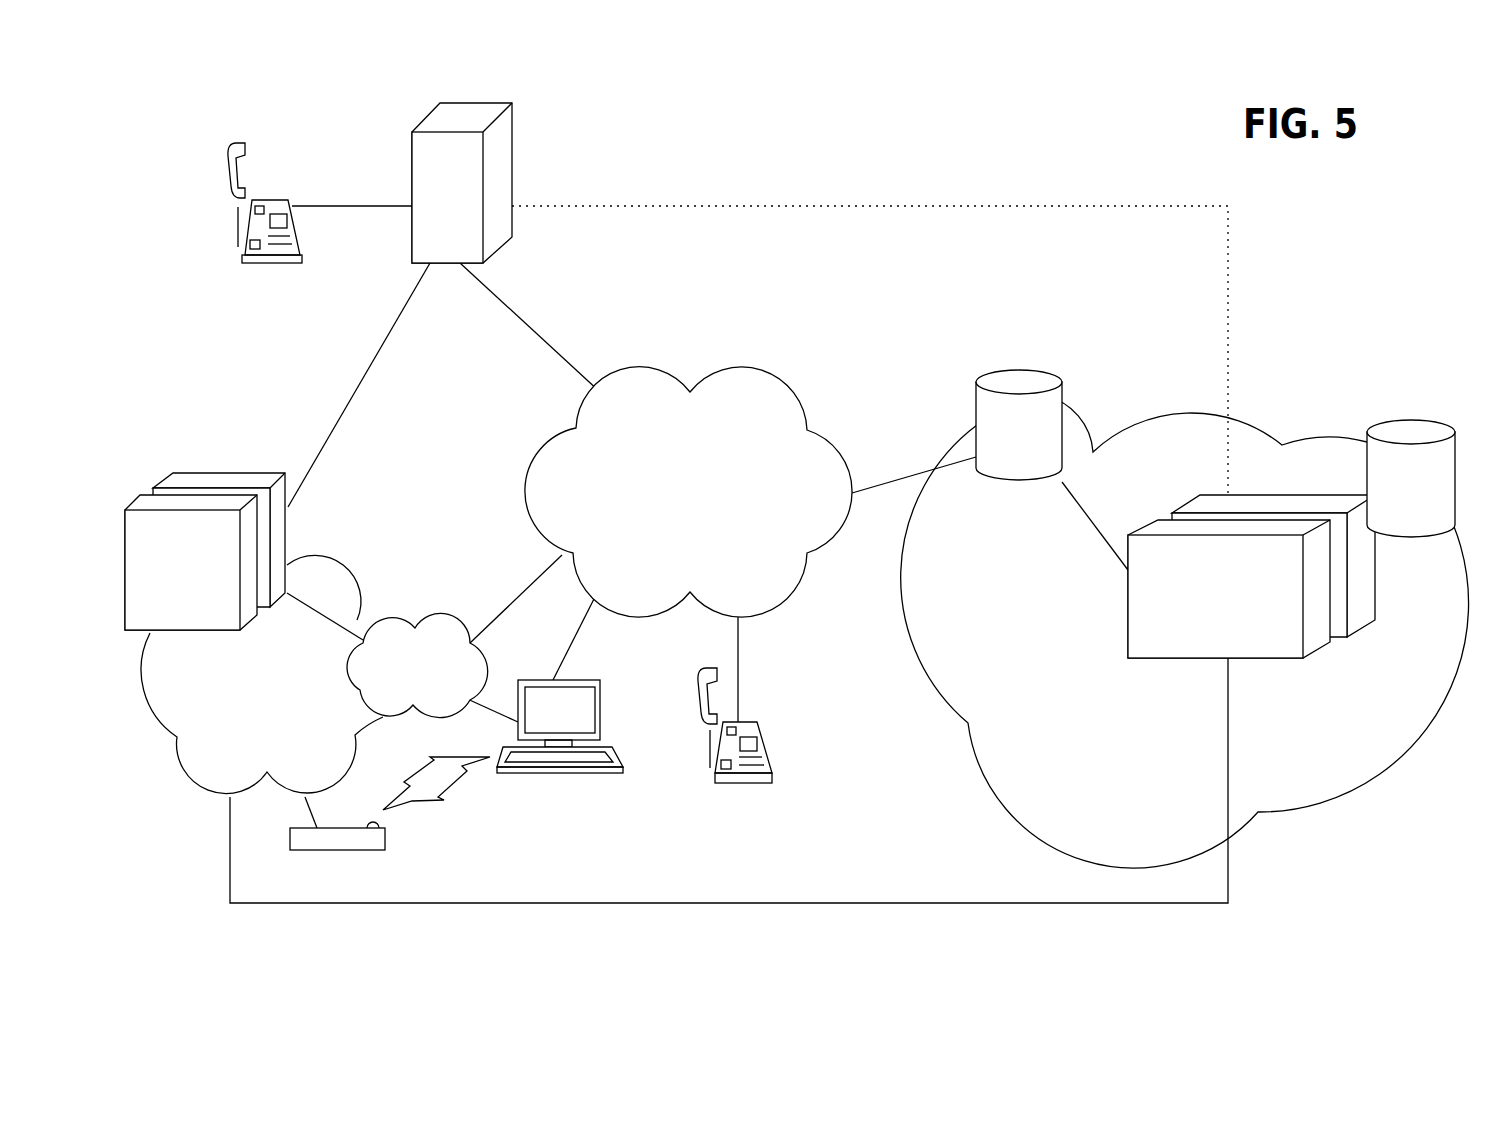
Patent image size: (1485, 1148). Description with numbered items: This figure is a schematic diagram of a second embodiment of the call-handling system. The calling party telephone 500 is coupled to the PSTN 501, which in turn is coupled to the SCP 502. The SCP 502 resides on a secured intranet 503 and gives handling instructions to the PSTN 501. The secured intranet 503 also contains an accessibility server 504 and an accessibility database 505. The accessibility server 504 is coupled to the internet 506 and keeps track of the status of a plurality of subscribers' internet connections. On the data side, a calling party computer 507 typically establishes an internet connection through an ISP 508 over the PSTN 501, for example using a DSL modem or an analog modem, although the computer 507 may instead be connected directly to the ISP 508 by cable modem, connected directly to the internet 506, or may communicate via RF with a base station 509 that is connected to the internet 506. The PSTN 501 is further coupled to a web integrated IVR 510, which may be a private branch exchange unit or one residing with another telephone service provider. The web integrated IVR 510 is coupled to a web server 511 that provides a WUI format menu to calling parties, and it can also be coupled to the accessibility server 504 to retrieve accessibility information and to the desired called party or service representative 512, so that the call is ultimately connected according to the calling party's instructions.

The calling party telephone 500 is at (747, 720).
The PSTN 501 is at (793, 580).
The SCP 502 is at (1043, 370).
The secured intranet 503 is at (1300, 833).
The accessibility server 504 is at (1143, 660).
The accessibility database 505 is at (1412, 418).
The internet 506 is at (340, 578).
The calling party computer 507 is at (600, 725).
The ISP 508 is at (390, 613).
The base station 509 is at (360, 850).
The web integrated IVR 510 is at (507, 240).
The web server 511 is at (193, 472).
The desired called party or service representative 512 is at (281, 199).